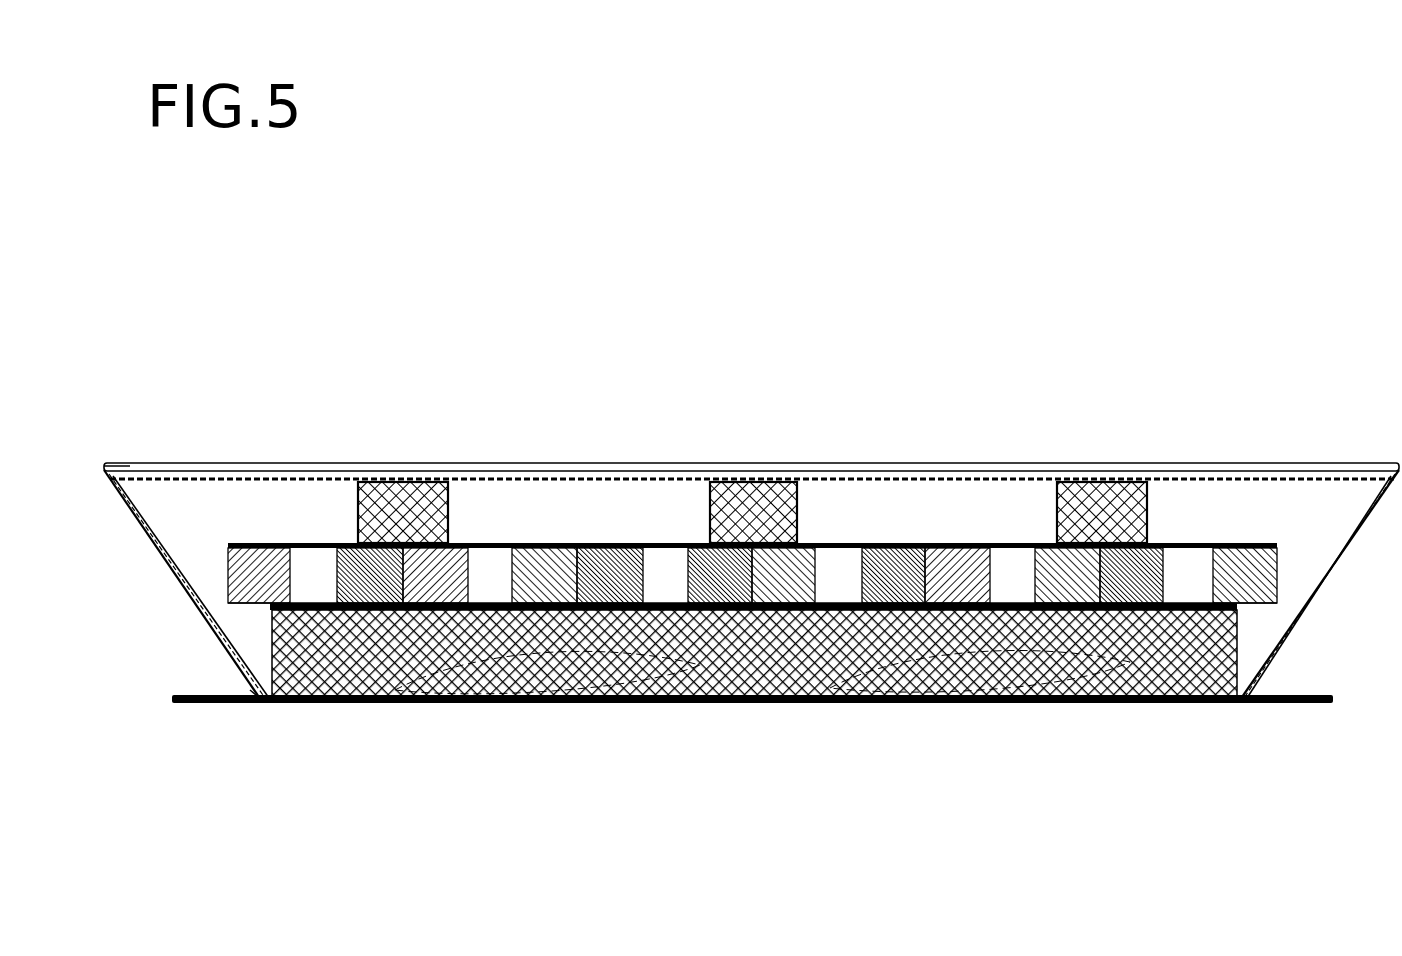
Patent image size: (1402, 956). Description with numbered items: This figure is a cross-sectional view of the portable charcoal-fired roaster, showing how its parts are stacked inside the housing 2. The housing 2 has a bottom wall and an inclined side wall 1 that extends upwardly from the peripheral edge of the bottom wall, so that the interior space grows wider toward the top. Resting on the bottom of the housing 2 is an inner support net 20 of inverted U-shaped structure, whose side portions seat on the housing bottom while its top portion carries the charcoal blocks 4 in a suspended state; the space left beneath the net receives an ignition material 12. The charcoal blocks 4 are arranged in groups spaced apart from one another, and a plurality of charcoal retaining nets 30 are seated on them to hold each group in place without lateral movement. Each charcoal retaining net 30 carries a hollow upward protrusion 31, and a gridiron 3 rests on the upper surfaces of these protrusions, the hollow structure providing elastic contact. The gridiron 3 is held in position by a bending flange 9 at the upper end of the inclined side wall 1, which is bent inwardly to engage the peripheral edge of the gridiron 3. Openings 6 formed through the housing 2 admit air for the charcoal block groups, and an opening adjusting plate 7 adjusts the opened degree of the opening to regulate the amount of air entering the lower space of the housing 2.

The inclined side wall 1 is at (158, 557).
The housing 2 is at (744, 572).
The gridiron 3 is at (578, 481).
The charcoal blocks 4 is at (1056, 580).
The openings 6 is at (242, 668).
The opening adjusting plate 7 is at (196, 703).
The bending flange 9 is at (128, 462).
The ignition material 12 is at (840, 672).
The inner support net 20 is at (753, 701).
The charcoal retaining nets 30 is at (724, 438).
The upward protrusion 31 is at (357, 516).